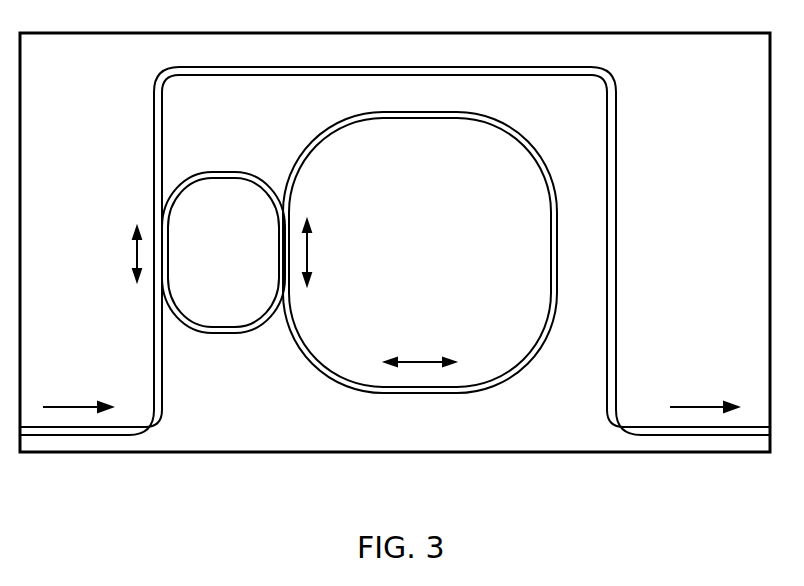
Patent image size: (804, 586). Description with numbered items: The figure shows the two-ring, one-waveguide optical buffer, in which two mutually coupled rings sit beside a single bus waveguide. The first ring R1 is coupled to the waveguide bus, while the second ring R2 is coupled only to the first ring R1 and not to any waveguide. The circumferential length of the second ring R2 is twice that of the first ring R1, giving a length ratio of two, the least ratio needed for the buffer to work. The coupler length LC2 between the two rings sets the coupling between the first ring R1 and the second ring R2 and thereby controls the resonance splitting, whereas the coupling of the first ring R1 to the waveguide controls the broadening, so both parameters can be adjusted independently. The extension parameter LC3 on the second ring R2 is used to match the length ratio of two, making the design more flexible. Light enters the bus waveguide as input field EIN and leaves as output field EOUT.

The first ring R1 is at (240, 232).
The second ring R2 is at (500, 159).
The coupler length between the rings LC2 is at (344, 252).
The extension parameter LC3 is at (419, 327).
The input optical field EIN is at (76, 371).
The output optical field EOUT is at (700, 371).